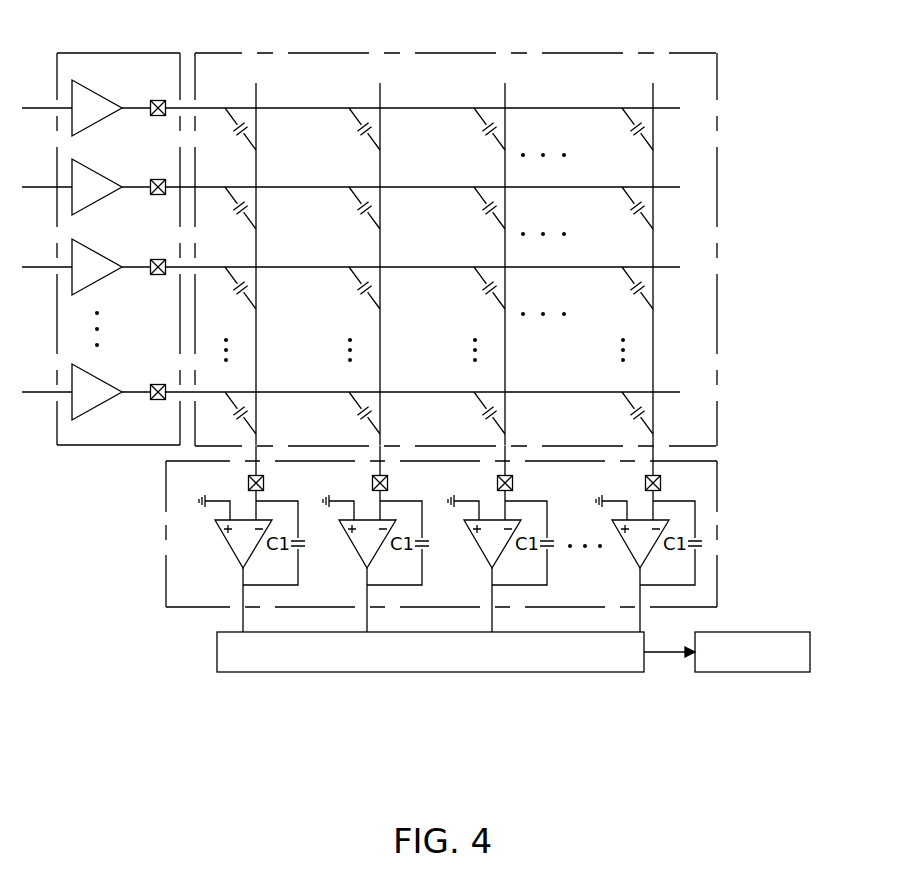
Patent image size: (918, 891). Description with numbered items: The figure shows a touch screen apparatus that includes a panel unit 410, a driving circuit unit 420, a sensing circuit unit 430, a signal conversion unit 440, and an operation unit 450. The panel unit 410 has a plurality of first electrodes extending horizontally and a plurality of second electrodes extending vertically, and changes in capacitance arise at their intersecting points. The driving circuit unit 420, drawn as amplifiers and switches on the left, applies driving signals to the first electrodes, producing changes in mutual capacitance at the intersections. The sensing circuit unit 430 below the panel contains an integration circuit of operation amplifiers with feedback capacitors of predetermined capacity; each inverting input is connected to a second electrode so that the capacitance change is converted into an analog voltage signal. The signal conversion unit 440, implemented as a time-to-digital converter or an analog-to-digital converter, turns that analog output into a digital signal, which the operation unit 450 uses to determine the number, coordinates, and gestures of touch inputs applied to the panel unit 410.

The panel unit 410 is at (474, 53).
The driving circuit unit 420 is at (117, 53).
The sensing circuit unit 430 is at (166, 539).
The signal conversion unit 440 is at (443, 672).
The operation unit 450 is at (760, 672).